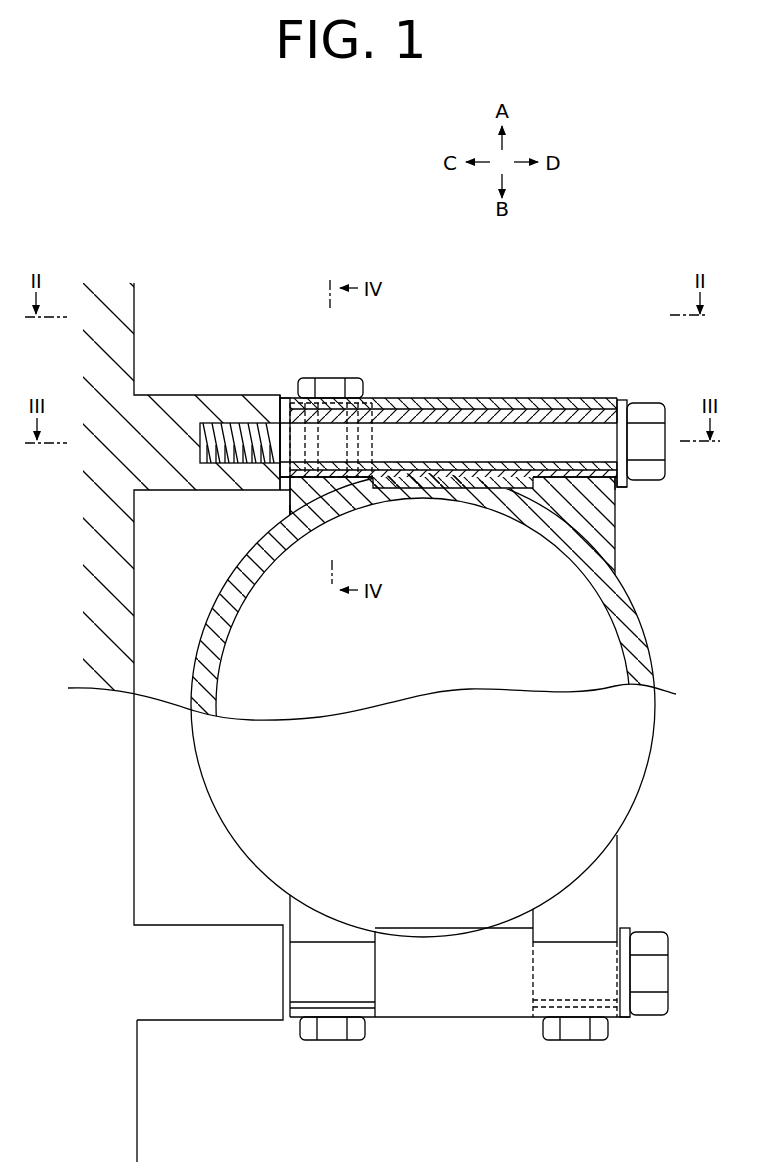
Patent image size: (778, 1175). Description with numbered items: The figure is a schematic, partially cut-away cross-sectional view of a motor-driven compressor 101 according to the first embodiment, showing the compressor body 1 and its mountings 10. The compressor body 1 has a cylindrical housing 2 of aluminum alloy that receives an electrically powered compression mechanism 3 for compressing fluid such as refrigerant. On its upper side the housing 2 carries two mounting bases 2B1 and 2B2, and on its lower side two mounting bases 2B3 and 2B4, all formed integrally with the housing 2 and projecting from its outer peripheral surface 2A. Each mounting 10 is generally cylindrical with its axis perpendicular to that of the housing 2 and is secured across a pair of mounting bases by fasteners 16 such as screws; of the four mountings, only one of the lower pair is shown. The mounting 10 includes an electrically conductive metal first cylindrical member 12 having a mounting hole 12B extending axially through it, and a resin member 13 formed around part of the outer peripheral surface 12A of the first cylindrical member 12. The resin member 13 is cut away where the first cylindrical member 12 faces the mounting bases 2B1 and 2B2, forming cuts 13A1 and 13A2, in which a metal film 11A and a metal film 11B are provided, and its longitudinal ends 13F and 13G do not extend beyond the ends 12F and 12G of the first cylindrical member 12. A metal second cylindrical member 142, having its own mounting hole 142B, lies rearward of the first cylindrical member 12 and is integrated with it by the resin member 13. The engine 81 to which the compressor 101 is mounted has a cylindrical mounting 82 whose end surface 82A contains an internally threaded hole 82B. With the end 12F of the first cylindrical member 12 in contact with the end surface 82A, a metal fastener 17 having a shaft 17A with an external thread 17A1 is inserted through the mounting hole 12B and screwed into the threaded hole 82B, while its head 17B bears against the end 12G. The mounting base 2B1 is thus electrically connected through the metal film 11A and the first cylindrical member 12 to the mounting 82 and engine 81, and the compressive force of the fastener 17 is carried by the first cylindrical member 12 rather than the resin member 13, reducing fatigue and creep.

The compressor body 1 is at (642, 791).
The housing 2 is at (644, 629).
The outer peripheral surface 2A is at (652, 676).
The mounting base 2B1 is at (288, 507).
The mounting base 2B2 is at (617, 551).
The mounting base 2B3 is at (290, 910).
The mounting base 2B4 is at (618, 905).
The compression mechanism 3 is at (224, 757).
The mounting 10 is at (628, 1022).
The metal film 11A is at (293, 520).
The metal film 11B is at (573, 480).
The first cylindrical member 12 is at (530, 398).
The outer peripheral surface 12A is at (480, 398).
The mounting hole 12B is at (576, 398).
The longitudinal end 12F is at (281, 490).
The longitudinal end 12G is at (632, 488).
The resin member 13 is at (437, 398).
The cut 13A1 is at (338, 478).
The cut 13A2 is at (544, 481).
The longitudinal end 13F is at (278, 405).
The longitudinal end 13G is at (617, 397).
The second cylindrical member 142 is at (340, 448).
The mounting hole 142B is at (410, 480).
The fastener 16 is at (350, 377).
The fastener 17 is at (667, 402).
The shaft 17A is at (622, 399).
The external thread 17A1 is at (215, 464).
The head 17B is at (667, 466).
The engine 81 is at (139, 1114).
The mounting 82 is at (158, 394).
The end surface 82A is at (283, 394).
The threaded hole 82B is at (198, 443).
The motor-driven compressor 101 is at (592, 257).